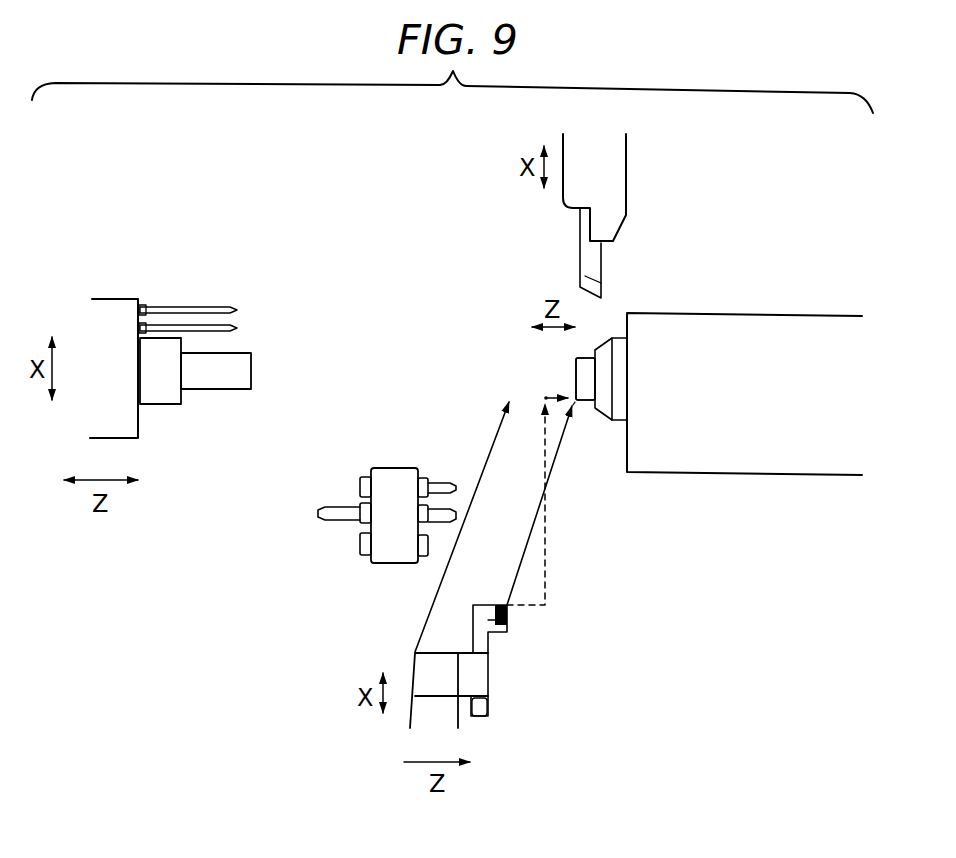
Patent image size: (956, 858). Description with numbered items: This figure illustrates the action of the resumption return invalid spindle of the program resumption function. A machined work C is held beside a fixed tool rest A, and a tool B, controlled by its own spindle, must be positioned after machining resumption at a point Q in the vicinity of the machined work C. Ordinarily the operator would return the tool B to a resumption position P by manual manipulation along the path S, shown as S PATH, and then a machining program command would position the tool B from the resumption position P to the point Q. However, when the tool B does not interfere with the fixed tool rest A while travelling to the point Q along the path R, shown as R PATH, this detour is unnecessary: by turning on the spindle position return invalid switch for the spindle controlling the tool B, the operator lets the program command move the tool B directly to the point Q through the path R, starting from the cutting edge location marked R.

The fixed tool rest A is at (395, 468).
The tool B is at (480, 676).
The machined work C is at (576, 366).
The resumption position P is at (556, 384).
The point Q is at (585, 420).
The path R is at (516, 624).
The path R R PATH is at (530, 537).
The path S S PATH is at (544, 581).